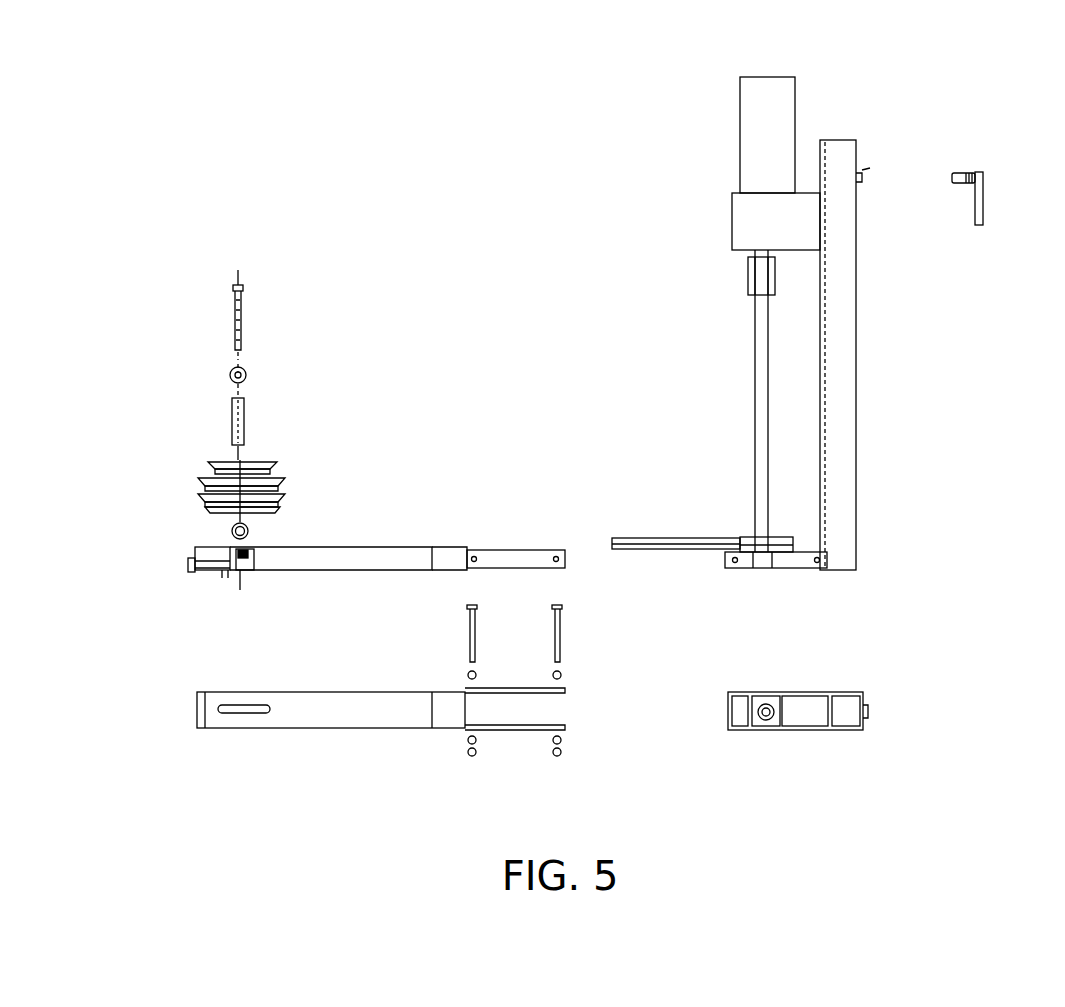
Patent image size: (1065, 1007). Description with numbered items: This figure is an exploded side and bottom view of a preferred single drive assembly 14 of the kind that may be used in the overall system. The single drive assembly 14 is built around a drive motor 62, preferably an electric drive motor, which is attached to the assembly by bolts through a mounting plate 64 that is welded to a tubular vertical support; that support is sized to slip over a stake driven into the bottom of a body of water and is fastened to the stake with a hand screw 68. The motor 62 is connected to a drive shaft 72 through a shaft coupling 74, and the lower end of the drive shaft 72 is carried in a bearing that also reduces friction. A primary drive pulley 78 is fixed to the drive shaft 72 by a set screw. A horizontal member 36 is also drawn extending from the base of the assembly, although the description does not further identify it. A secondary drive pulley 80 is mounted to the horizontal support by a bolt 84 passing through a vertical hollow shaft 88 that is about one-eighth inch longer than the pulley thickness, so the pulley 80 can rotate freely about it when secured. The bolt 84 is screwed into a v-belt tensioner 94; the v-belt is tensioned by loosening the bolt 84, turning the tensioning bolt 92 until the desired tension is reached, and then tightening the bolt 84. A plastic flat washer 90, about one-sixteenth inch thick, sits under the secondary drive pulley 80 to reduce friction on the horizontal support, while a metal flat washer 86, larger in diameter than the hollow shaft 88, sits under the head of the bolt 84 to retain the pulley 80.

The single drive assembly 14 is at (484, 124).
The support arm 36 is at (628, 540).
The drive motor 62 is at (740, 144).
The mounting plate 64 is at (822, 221).
The hand screw 68 is at (985, 176).
The drive shaft 72 is at (758, 415).
The shaft coupling 74 is at (750, 280).
The primary drive pulley 78 is at (745, 540).
The secondary drive pulley 80 is at (268, 480).
The bolt 84 is at (243, 300).
The metal flat washer 86 is at (246, 372).
The vertical hollow shaft 88 is at (246, 412).
The plastic flat washer 90 is at (249, 530).
The tensioning bolt 92 is at (210, 572).
The v-belt tensioner 94 is at (252, 567).